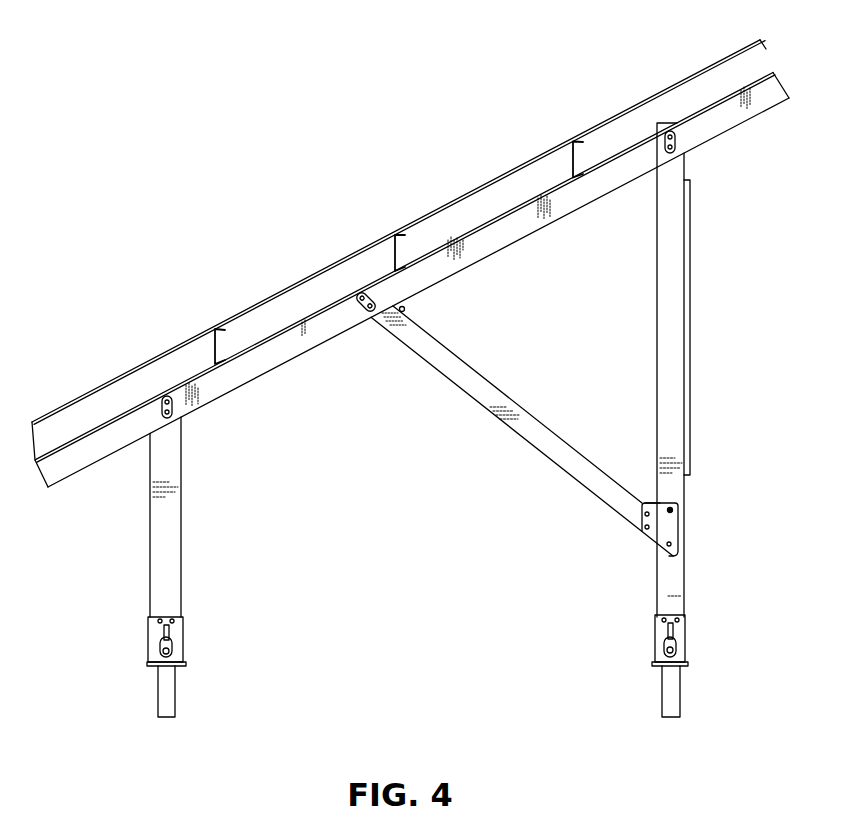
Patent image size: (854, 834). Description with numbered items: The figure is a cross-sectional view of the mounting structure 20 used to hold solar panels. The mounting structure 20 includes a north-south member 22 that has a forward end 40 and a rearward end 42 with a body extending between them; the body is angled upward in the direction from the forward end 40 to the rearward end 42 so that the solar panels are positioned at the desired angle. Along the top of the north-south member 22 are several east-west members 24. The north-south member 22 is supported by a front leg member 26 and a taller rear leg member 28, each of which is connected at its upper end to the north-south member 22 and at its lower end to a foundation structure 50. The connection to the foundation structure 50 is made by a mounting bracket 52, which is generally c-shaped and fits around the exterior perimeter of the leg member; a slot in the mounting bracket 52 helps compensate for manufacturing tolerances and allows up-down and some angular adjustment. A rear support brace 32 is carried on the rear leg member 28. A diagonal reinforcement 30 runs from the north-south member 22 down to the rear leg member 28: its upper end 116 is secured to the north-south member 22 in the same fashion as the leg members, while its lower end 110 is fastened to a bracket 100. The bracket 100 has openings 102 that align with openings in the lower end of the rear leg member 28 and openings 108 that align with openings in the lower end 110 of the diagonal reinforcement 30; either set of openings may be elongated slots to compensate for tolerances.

The mounting structure 20 is at (271, 197).
The north-south member 22 is at (273, 348).
The east-west member 24 is at (392, 247).
The front leg member 26 is at (182, 562).
The rear leg member 28 is at (690, 380).
The diagonal reinforcement 30 is at (481, 403).
The rear support brace 32 is at (691, 330).
The forward end 40 is at (45, 473).
The rearward end 42 is at (786, 84).
The foundation structure 50 is at (682, 717).
The mounting bracket 52 is at (147, 640).
The bracket 100 is at (673, 532).
The openings 102 is at (673, 510).
The openings 108 is at (644, 525).
The lower end 110 is at (645, 500).
The upper end 116 is at (405, 309).